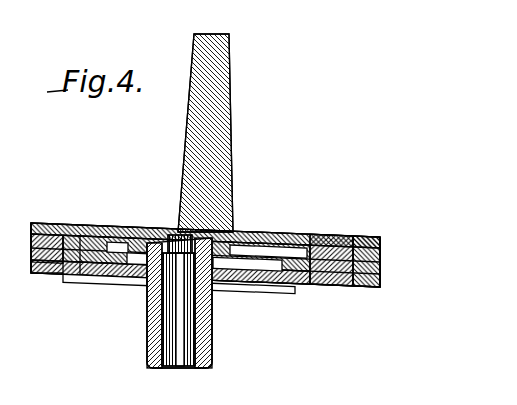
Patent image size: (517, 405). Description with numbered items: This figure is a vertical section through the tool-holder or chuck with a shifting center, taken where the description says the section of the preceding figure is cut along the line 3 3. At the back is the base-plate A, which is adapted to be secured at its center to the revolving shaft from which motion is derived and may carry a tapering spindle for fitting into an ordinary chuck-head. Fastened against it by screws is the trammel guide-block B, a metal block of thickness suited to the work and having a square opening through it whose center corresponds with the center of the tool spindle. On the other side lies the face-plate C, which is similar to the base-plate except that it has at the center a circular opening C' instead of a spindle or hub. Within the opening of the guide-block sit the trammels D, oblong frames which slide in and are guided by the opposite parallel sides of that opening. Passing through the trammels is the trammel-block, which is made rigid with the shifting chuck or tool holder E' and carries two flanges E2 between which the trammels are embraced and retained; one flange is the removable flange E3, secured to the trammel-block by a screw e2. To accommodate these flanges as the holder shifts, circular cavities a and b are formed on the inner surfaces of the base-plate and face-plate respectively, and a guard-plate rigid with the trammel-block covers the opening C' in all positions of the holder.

The section line 3 3 is at (22, 247).
The base-plate A is at (205, 276).
The circular cavity a is at (268, 232).
The circular cavity b is at (265, 297).
The trammel guide-block B is at (367, 287).
The face-plate C is at (40, 265).
The circular opening C' is at (253, 319).
The trammel D is at (169, 232).
The shifting chuck or tool holder E' is at (207, 309).
The flange E2 is at (122, 298).
The removable flange E3 is at (106, 299).
The screw e2 is at (150, 317).